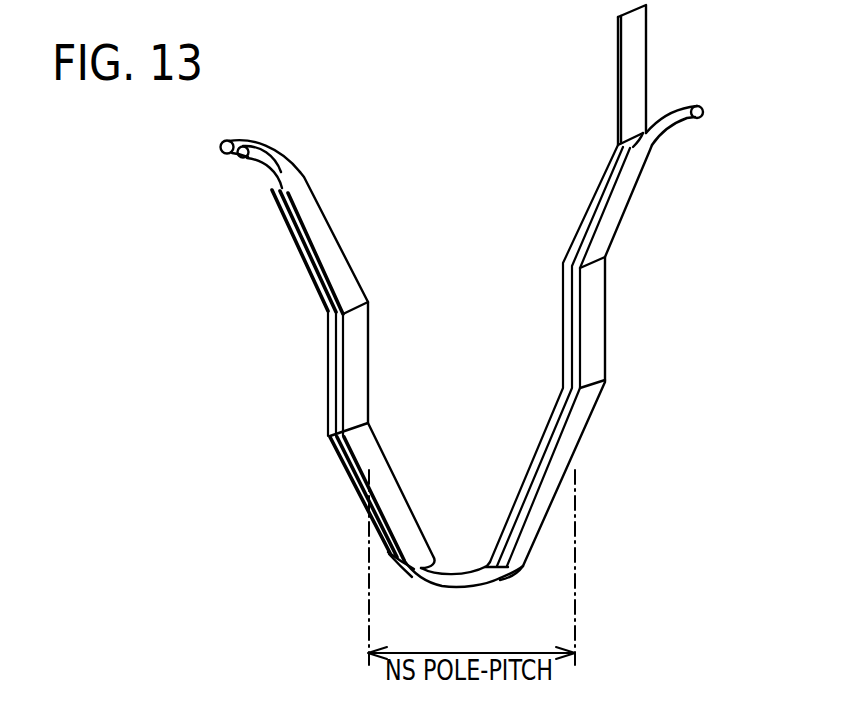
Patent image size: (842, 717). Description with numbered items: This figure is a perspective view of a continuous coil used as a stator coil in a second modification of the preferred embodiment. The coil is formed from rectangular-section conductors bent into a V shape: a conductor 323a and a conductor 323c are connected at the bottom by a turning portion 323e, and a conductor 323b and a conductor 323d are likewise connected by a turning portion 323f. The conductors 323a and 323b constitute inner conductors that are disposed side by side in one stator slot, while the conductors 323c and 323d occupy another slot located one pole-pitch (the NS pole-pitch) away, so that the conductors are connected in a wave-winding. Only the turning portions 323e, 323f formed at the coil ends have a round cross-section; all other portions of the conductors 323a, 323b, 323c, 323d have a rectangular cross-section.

The conductor 323a is at (331, 373).
The conductor 323b is at (363, 360).
The conductor 323c is at (563, 307).
The conductor 323d is at (598, 305).
The turning portion 323e is at (415, 578).
The turning portion 323f is at (488, 584).